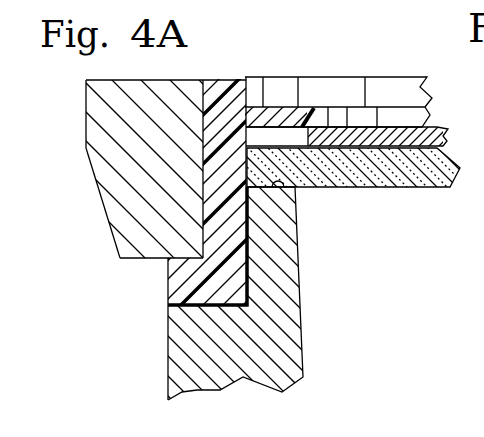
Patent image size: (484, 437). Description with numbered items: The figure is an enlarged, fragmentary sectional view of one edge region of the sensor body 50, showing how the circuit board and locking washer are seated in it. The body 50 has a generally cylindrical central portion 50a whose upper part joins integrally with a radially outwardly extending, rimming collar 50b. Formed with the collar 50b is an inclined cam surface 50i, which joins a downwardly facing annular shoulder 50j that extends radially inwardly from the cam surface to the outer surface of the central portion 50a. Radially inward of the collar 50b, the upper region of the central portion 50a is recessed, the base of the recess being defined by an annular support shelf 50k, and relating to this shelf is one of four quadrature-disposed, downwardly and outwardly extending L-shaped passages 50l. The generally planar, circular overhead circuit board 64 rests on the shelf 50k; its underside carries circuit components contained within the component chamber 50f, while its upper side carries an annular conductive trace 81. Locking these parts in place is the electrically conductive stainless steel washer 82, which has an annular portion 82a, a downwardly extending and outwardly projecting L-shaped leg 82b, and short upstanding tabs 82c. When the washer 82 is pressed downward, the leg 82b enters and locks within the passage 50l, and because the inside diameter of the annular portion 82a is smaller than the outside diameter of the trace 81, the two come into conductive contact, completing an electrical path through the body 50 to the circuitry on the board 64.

The body 50 is at (122, 328).
The central portion 50a is at (183, 361).
The rimming collar 50b is at (100, 117).
The inclined cam surface 50i is at (97, 193).
The annular shoulder 50j is at (135, 259).
The support shelf 50k is at (281, 182).
The L-shaped passage 50l is at (240, 250).
The component chamber 50f is at (390, 298).
The circuit board 64 is at (385, 183).
The annular conductive trace 81 is at (400, 130).
The electrically conductive washer 82 is at (376, 64).
The annular portion 82a is at (300, 108).
The L-shaped leg 82b is at (222, 279).
The upstanding tab 82c is at (215, 83).